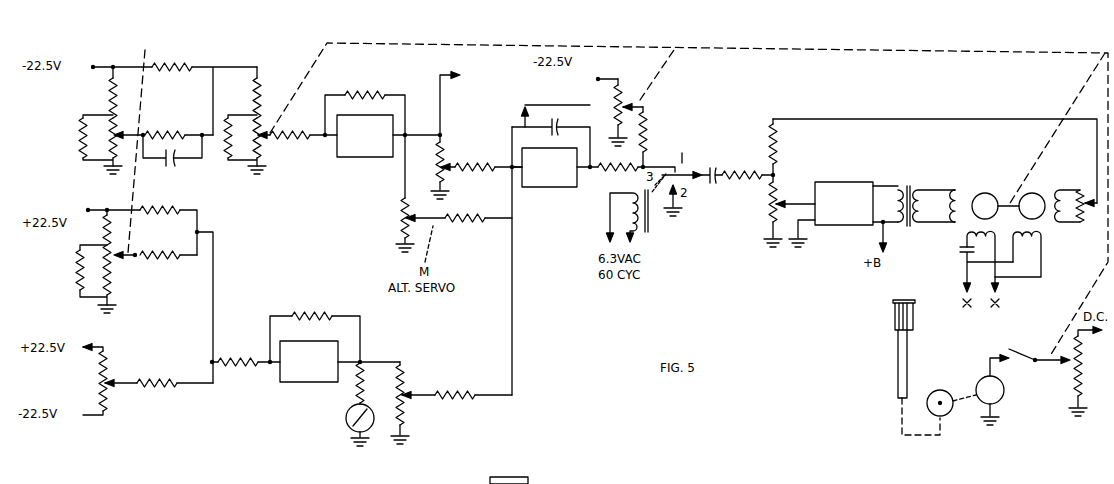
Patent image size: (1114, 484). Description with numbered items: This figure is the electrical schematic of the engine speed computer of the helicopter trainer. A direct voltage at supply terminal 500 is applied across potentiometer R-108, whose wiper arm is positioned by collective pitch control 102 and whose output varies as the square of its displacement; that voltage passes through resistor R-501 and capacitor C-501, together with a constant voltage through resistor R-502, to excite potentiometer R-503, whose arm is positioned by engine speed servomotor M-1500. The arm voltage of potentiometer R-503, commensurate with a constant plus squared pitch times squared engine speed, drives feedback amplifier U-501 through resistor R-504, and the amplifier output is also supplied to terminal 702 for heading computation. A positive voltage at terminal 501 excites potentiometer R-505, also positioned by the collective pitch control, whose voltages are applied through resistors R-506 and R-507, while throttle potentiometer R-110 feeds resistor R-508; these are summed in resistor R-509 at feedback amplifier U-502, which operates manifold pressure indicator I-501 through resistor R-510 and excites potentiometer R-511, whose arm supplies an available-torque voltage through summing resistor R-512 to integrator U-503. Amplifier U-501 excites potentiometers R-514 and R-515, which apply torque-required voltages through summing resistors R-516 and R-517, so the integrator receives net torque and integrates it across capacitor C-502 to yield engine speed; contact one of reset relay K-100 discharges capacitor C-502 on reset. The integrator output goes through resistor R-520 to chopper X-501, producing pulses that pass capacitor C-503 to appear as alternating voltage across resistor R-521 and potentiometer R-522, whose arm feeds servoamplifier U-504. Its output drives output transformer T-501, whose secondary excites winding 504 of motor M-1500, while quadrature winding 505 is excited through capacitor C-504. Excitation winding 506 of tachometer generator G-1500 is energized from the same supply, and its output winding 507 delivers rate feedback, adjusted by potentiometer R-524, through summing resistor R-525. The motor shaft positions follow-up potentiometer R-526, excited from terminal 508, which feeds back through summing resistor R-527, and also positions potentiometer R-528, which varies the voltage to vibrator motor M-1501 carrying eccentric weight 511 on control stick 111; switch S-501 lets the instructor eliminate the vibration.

The supply terminal 500 is at (75, 57).
The collective pitch control 102 is at (127, 136).
The terminal 501 is at (95, 206).
The terminal 702 is at (463, 102).
The terminal 508 is at (590, 81).
The exciting winding 504 is at (966, 181).
The quadrature winding 505 is at (966, 235).
The excitation winding 506 is at (1041, 232).
The output winding 507 is at (1082, 175).
The eccentric weight 511 is at (946, 390).
The control stick 111 is at (897, 352).
The potentiometer R-108 is at (110, 78).
The potentiometer R-110 is at (100, 375).
The resistor R-501 is at (148, 123).
The resistor R-502 is at (197, 63).
The potentiometer R-503 is at (245, 106).
The resistor R-504 is at (272, 146).
The potentiometer R-505 is at (113, 264).
The resistor R-506 is at (184, 199).
The resistor R-507 is at (184, 244).
The resistor R-508 is at (183, 379).
The resistor R-509 is at (262, 358).
The resistor R-510 is at (352, 397).
The potentiometer R-511 is at (417, 403).
The summing resistor R-512 is at (478, 393).
The potentiometer R-514 is at (455, 167).
The potentiometer R-515 is at (382, 193).
The summing resistor R-516 is at (457, 151).
The summing resistor R-517 is at (459, 210).
The resistor R-520 is at (639, 173).
The resistor R-521 is at (748, 183).
The potentiometer R-522 is at (764, 202).
The potentiometer R-524 is at (1082, 220).
The summing resistor R-525 is at (774, 143).
The follow-up potentiometer R-526 is at (633, 104).
The summing resistor R-527 is at (655, 121).
The potentiometer R-528 is at (1075, 380).
The capacitor C-501 is at (186, 174).
The capacitor C-502 is at (550, 130).
The capacitor C-503 is at (708, 169).
The capacitor C-504 is at (964, 269).
The direct current feedback amplifier U-501 is at (383, 124).
The feedback amplifier U-502 is at (335, 347).
The integrator U-503 is at (549, 167).
The alternating current servoamplifier U-504 is at (843, 217).
The manifold pressure indicator I-501 is at (346, 428).
The reset relay K-100 is at (552, 104).
The chopper X-501 is at (647, 220).
The output transformer T-501 is at (929, 179).
The engine speed servomotor M-1500 is at (990, 193).
The tachometer generator G-1500 is at (1035, 193).
The vibrator motor M-1501 is at (1000, 403).
The switch S-501 is at (1023, 339).